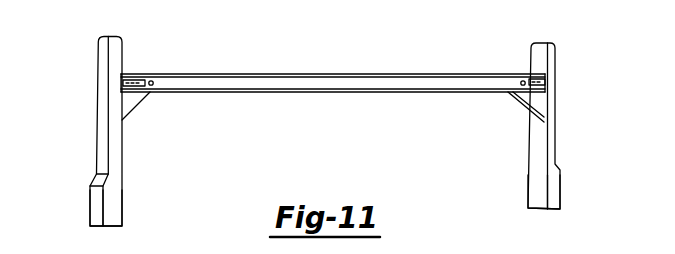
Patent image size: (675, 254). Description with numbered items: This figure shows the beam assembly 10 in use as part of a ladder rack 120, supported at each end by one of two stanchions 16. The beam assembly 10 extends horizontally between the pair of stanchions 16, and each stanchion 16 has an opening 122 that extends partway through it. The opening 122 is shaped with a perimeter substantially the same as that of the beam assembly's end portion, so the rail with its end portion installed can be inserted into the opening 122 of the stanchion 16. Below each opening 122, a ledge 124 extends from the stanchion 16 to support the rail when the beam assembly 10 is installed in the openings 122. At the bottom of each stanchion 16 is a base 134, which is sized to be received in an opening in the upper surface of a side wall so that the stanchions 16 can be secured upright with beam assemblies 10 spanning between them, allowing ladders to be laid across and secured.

The beam assembly 10 is at (311, 74).
The stanchion 16 is at (97, 140).
The ladder rack 120 is at (531, 253).
The opening 122 is at (133, 80).
The ledge 124 is at (136, 106).
The base 134 is at (97, 227).